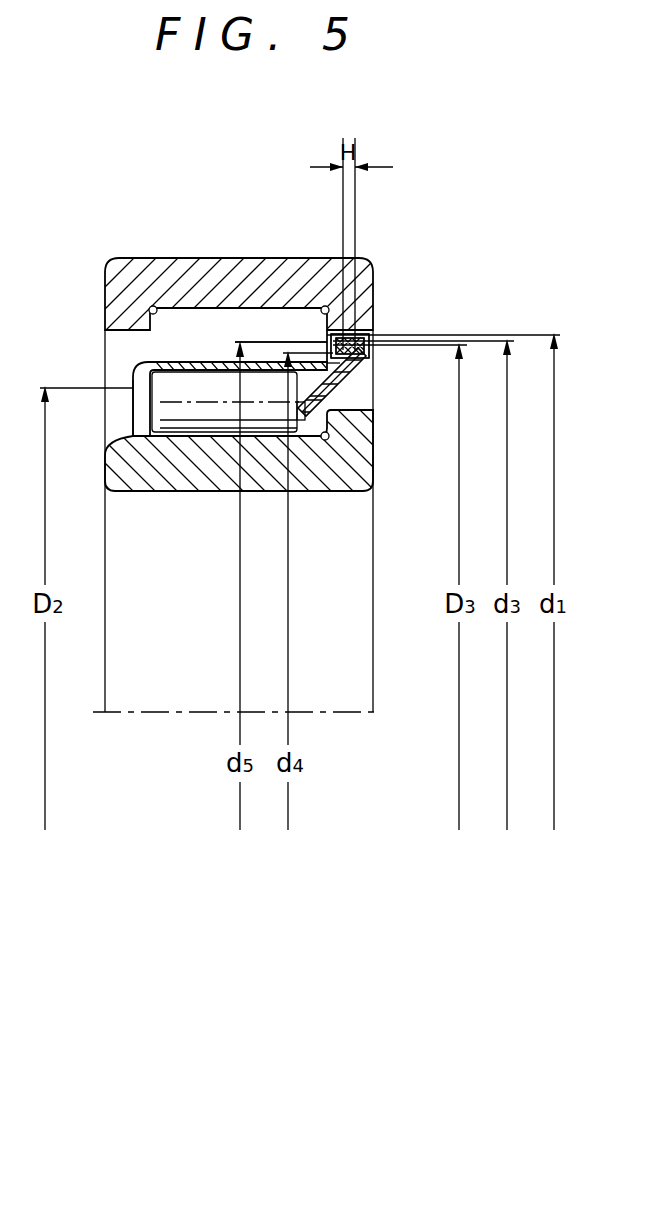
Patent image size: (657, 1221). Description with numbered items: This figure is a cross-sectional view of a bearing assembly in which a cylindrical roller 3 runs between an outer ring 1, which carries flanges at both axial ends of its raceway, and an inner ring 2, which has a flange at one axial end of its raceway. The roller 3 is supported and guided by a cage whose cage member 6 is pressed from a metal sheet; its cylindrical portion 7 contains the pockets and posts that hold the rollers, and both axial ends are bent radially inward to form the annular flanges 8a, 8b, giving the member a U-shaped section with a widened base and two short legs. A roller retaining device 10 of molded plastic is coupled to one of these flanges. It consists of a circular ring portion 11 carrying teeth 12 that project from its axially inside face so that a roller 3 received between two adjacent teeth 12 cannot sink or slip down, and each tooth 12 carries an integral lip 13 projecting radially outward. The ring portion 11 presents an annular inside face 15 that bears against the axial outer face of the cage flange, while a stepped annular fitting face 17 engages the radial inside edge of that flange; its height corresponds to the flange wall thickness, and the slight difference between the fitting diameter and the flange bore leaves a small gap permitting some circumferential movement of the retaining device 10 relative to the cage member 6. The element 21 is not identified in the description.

The outer ring 1 is at (118, 273).
The inner ring 2 is at (371, 492).
The cylindrical roller 3 is at (188, 412).
The cage member 6 is at (183, 355).
The cylindrical portion 7 is at (167, 361).
The annular flange 8a is at (135, 368).
The annular flange 8b is at (347, 385).
The roller retaining device 10 is at (350, 420).
The ring portion 11 is at (342, 410).
The teeth 12 is at (327, 494).
The lip 13 is at (334, 338).
The annular inside face 15 is at (350, 358).
The annular fitting face 17 is at (368, 340).
The clearance gap 21 is at (330, 350).